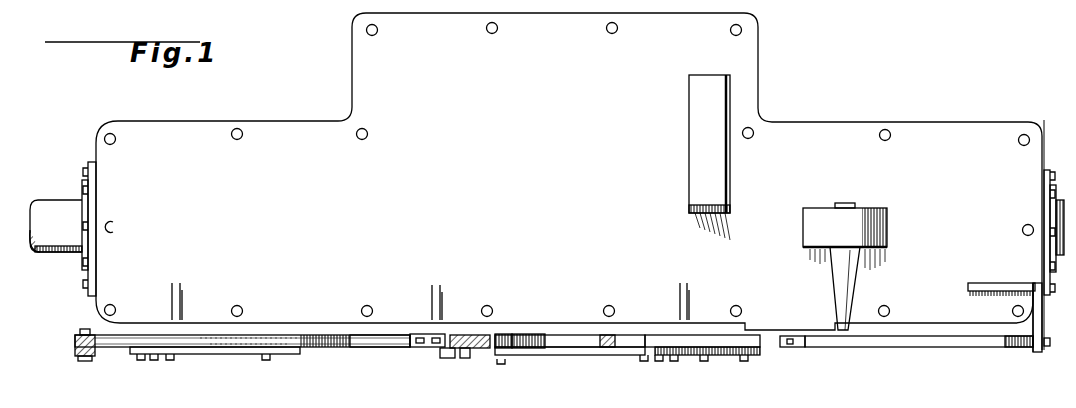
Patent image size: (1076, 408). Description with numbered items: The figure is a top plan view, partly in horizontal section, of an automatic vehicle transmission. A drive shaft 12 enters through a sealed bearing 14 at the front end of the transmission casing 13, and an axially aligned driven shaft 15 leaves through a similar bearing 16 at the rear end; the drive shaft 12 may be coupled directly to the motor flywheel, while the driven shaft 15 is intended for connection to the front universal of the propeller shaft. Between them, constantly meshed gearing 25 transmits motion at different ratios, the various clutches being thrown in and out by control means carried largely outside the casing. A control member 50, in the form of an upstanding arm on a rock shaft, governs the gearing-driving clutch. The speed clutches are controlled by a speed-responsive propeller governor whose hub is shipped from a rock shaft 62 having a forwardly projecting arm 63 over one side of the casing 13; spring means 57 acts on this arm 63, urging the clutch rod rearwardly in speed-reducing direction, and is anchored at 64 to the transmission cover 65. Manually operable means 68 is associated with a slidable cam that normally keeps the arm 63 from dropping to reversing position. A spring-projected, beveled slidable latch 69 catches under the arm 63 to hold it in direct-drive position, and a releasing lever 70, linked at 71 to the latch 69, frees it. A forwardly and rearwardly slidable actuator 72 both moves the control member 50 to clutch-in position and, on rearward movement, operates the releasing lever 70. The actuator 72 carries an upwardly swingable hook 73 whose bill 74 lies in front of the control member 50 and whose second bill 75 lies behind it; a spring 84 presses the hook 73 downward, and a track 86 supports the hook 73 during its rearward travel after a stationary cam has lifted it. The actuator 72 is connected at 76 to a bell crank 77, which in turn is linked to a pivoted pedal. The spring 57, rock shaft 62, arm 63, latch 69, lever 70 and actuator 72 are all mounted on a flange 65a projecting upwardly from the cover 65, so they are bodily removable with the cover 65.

The drive shaft 12 is at (50, 210).
The transmission casing 13 is at (89, 147).
The bearing 14 is at (82, 256).
The driven shaft 15 is at (1050, 240).
The bearing 16 is at (1044, 190).
The constantly meshed gearing 25 is at (536, 407).
The control member 50 is at (447, 359).
The spring means 57 is at (930, 348).
The rock shaft 62 is at (845, 204).
The arm 63 is at (795, 349).
The anchor 64 is at (1035, 352).
The transmission cover 65 is at (282, 128).
The flange 65a is at (292, 322).
The manually operable means 68 is at (610, 348).
The slidable latch 69 is at (745, 348).
The releasing lever 70 is at (504, 334).
The link 71 is at (596, 355).
The actuator 72 is at (120, 348).
The hook 73 is at (470, 334).
The bill 74 is at (435, 348).
The bill 75 is at (466, 359).
The connection 76 is at (72, 335).
The bell crank 77 is at (80, 352).
The spring 84 is at (350, 348).
The track 86 is at (530, 336).